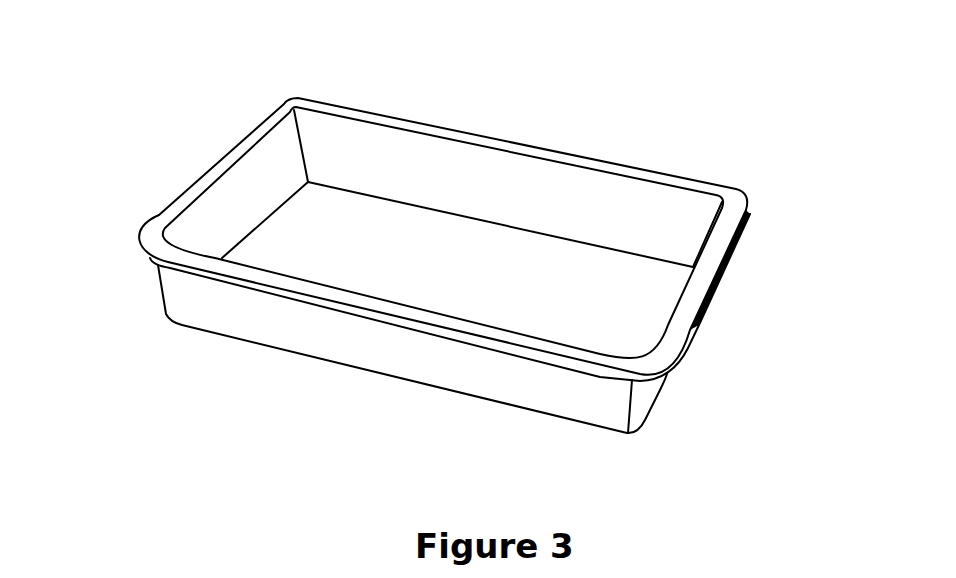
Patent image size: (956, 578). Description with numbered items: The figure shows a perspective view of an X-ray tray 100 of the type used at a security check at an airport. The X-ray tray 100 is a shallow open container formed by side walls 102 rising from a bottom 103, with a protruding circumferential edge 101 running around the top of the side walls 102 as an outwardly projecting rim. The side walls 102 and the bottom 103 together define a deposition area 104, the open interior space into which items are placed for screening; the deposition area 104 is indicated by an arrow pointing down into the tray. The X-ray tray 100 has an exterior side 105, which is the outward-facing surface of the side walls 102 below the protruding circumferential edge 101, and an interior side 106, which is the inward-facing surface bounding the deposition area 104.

The X-ray tray 100 is at (531, 182).
The protruding circumferential edge 101 is at (209, 177).
The side walls 102 is at (212, 223).
The bottom 103 is at (350, 256).
The deposition area 104 is at (398, 155).
The exterior side 105 is at (447, 364).
The interior side 106 is at (597, 198).